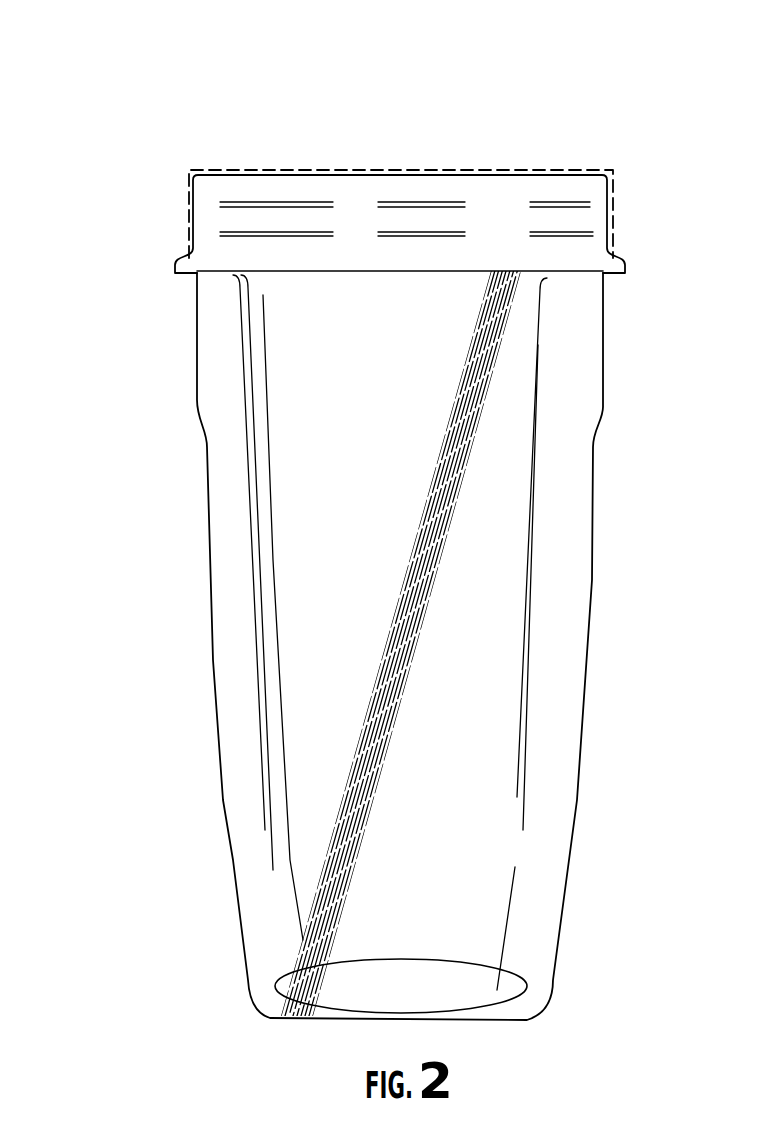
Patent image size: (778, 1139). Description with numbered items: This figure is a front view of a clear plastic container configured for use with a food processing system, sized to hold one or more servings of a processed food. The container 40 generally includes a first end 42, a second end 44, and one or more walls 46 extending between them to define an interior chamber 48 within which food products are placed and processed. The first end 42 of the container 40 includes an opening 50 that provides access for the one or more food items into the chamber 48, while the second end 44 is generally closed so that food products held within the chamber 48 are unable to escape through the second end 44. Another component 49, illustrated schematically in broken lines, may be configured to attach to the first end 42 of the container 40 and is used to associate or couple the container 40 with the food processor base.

The container 40 is at (115, 80).
The first end 42 is at (586, 186).
The second end 44 is at (292, 1014).
The walls 46 is at (240, 615).
The interior chamber 48 is at (442, 497).
The component 49 is at (186, 187).
The opening 50 is at (383, 185).